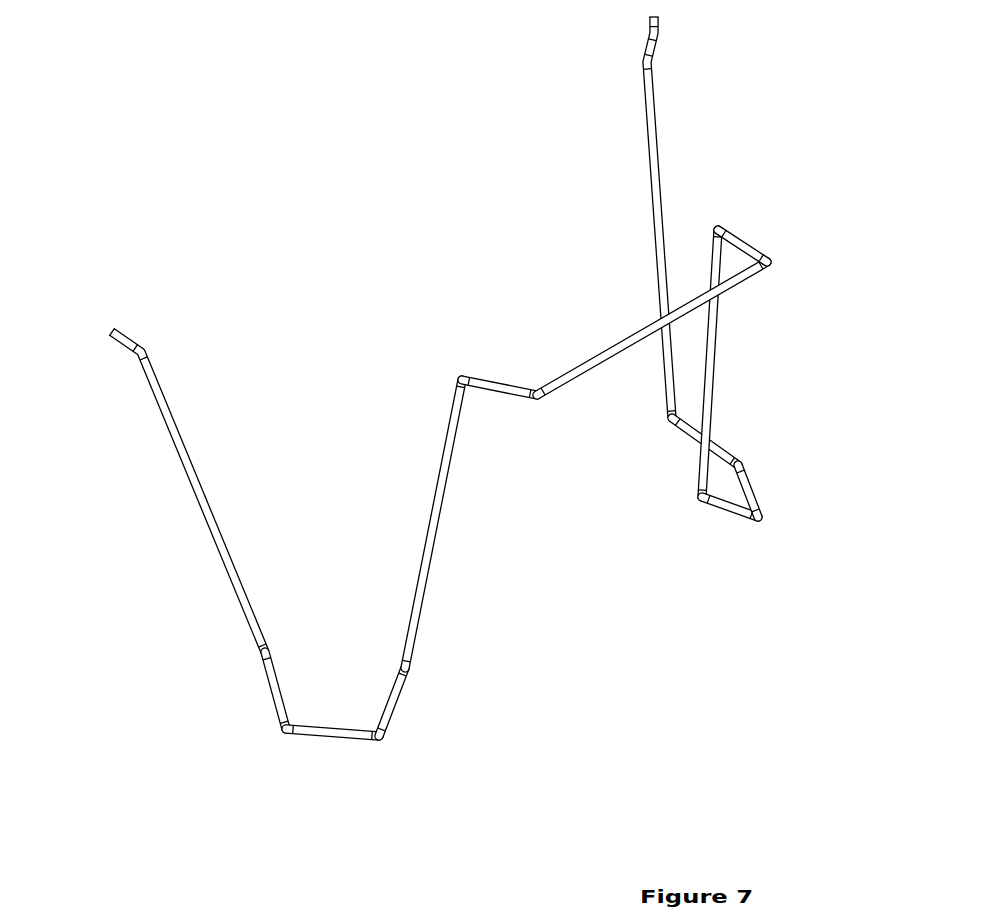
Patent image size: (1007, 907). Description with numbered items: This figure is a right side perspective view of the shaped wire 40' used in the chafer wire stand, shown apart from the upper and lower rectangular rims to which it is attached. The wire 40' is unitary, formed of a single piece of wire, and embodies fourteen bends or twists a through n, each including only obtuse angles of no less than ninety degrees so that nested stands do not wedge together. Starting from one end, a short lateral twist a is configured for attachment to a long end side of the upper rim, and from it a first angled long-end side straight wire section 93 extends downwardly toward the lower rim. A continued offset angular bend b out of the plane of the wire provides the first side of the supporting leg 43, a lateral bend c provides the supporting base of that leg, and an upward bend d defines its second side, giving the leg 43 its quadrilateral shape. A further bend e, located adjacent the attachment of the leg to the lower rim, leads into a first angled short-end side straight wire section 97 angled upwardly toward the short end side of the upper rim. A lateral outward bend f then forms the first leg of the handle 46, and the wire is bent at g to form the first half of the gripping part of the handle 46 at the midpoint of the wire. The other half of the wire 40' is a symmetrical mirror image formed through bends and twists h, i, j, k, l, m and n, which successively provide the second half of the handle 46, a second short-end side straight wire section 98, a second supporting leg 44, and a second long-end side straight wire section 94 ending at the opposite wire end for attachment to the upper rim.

The wire 40' is at (446, 427).
The first angled long-end side straight wire section 93 is at (200, 505).
The supporting leg 43 is at (330, 740).
The first angled short-end side straight wire section 97 is at (427, 558).
The handle 46 is at (604, 352).
The second long-end side straight wire section 94 is at (658, 205).
The second short-end side straight wire section 98 is at (710, 370).
The second supporting leg 44 is at (752, 498).
The short lateral twist a is at (125, 350).
The offset angular bend b is at (262, 654).
The lateral bend c is at (284, 734).
The upward bend d is at (380, 740).
The bend e is at (410, 672).
The lateral outward bend f is at (457, 375).
The bend g is at (545, 398).
The bend h is at (772, 265).
The bend i is at (722, 226).
The bend j is at (704, 502).
The bend k is at (757, 522).
The bend l is at (744, 462).
The bend m is at (668, 421).
The twist n is at (657, 47).